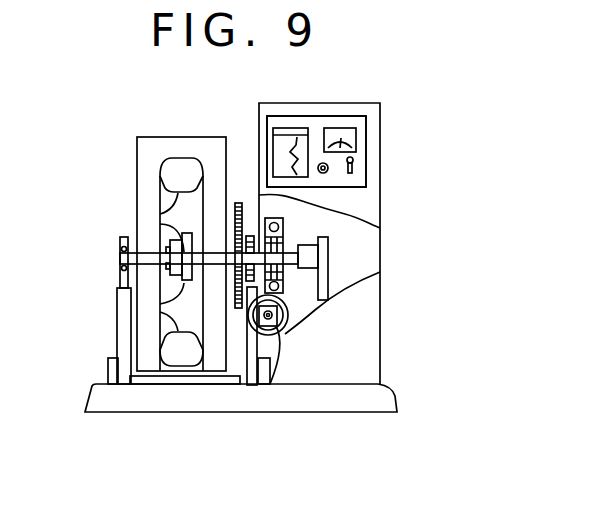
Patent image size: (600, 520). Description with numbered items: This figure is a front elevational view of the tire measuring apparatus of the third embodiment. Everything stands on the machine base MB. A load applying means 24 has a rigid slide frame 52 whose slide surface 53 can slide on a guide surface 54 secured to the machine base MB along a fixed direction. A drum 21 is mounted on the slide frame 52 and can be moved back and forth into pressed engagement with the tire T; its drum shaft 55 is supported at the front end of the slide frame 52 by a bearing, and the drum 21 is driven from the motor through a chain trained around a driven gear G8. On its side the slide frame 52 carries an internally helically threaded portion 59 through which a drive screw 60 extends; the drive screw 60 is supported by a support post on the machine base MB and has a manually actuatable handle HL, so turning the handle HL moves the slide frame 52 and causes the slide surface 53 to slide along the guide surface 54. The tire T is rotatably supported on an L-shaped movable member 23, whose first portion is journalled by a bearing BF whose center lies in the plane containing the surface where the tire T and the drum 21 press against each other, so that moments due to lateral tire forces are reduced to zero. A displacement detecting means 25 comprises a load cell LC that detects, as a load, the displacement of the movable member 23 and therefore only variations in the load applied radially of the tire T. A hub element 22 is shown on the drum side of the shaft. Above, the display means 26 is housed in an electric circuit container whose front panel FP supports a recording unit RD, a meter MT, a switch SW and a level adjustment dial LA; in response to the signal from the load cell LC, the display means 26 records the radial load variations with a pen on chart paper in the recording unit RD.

The drum 21 is at (160, 152).
The hub 22 is at (166, 250).
The movable member 23 is at (290, 263).
The load applying means 24 is at (276, 219).
The displacement detecting means 25 is at (398, 264).
The display means 26 is at (332, 96).
The slide frame 52 is at (117, 324).
The slide surface 53 is at (191, 386).
The guide surface 54 is at (108, 362).
The drum shaft 55 is at (119, 258).
The internally helically threaded portion 59 is at (280, 327).
The drive screw 60 is at (268, 322).
The tire T is at (191, 158).
The driven gear G8 is at (238, 203).
The recording unit RD is at (292, 116).
The meter MT is at (345, 116).
The front panel FP is at (374, 133).
The switch SW is at (357, 168).
The level adjustment dial LA is at (329, 173).
The load cell LC is at (307, 245).
The bearing BF is at (284, 278).
The handle HL is at (283, 338).
The machine base MB is at (130, 393).